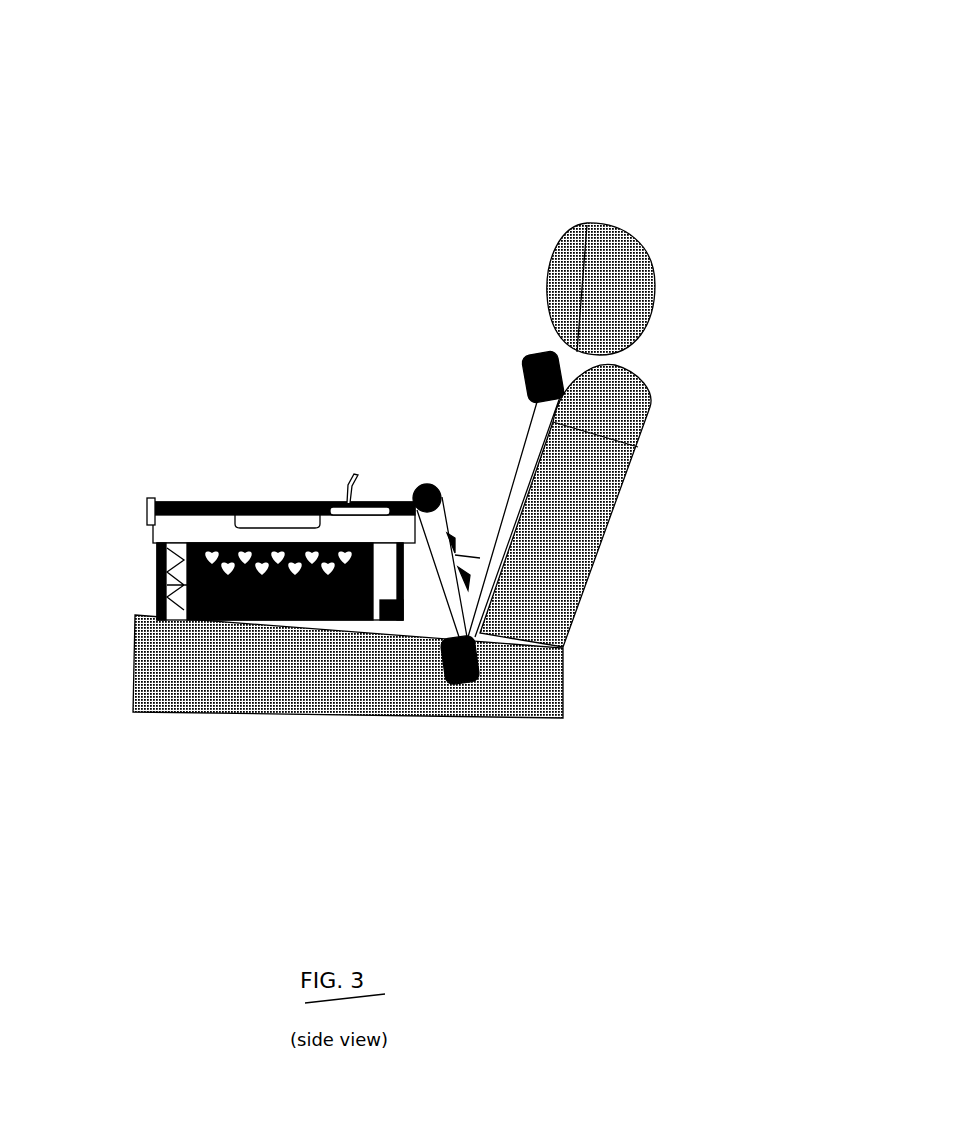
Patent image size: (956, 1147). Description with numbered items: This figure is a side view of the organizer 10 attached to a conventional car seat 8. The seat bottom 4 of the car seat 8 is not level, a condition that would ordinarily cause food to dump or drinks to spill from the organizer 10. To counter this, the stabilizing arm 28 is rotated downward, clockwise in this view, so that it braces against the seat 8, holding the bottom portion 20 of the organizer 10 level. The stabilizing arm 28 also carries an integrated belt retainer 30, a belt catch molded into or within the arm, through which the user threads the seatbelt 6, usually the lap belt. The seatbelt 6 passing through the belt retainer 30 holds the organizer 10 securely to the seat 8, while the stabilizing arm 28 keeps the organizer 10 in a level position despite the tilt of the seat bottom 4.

The car seat 8 is at (671, 223).
The seat bottom 4 is at (177, 692).
The organizer 10 is at (246, 525).
The bottom portion 20 is at (372, 640).
The seatbelt 6 is at (493, 541).
The belt retainer 30 is at (473, 518).
The stabilizing arm 28 is at (456, 480).